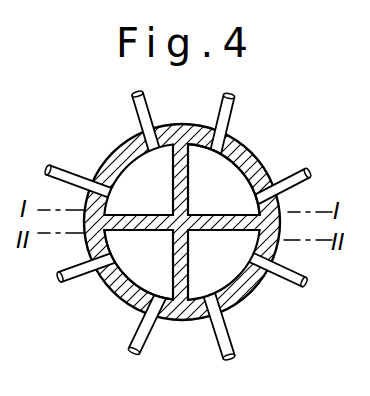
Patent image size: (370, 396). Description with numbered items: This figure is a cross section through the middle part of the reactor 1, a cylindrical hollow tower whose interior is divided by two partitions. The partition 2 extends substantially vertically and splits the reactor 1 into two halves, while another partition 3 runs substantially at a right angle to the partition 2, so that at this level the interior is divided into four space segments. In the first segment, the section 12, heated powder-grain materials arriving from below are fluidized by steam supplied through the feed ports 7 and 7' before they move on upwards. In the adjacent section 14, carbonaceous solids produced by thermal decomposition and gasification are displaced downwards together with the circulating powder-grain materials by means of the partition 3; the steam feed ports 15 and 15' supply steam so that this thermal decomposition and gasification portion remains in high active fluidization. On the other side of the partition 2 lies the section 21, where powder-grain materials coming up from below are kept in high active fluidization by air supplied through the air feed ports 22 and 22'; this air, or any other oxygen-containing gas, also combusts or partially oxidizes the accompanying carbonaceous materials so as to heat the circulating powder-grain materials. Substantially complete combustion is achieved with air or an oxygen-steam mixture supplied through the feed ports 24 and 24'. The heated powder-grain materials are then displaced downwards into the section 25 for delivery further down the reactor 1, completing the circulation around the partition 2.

The reactor 1 is at (115, 158).
The partition 2 is at (190, 187).
The partition 3 is at (150, 277).
The feed port 7 is at (78, 152).
The feed port 7' is at (160, 115).
The section 12 is at (158, 175).
The section 14 is at (148, 280).
The steam feed port 15 is at (81, 288).
The steam feed port 15' is at (163, 336).
The section 21 is at (230, 265).
The air feed port 22 is at (247, 340).
The air feed port 22' is at (296, 292).
The feed port 24 is at (252, 118).
The feed port 24' is at (300, 163).
The section 25 is at (234, 194).